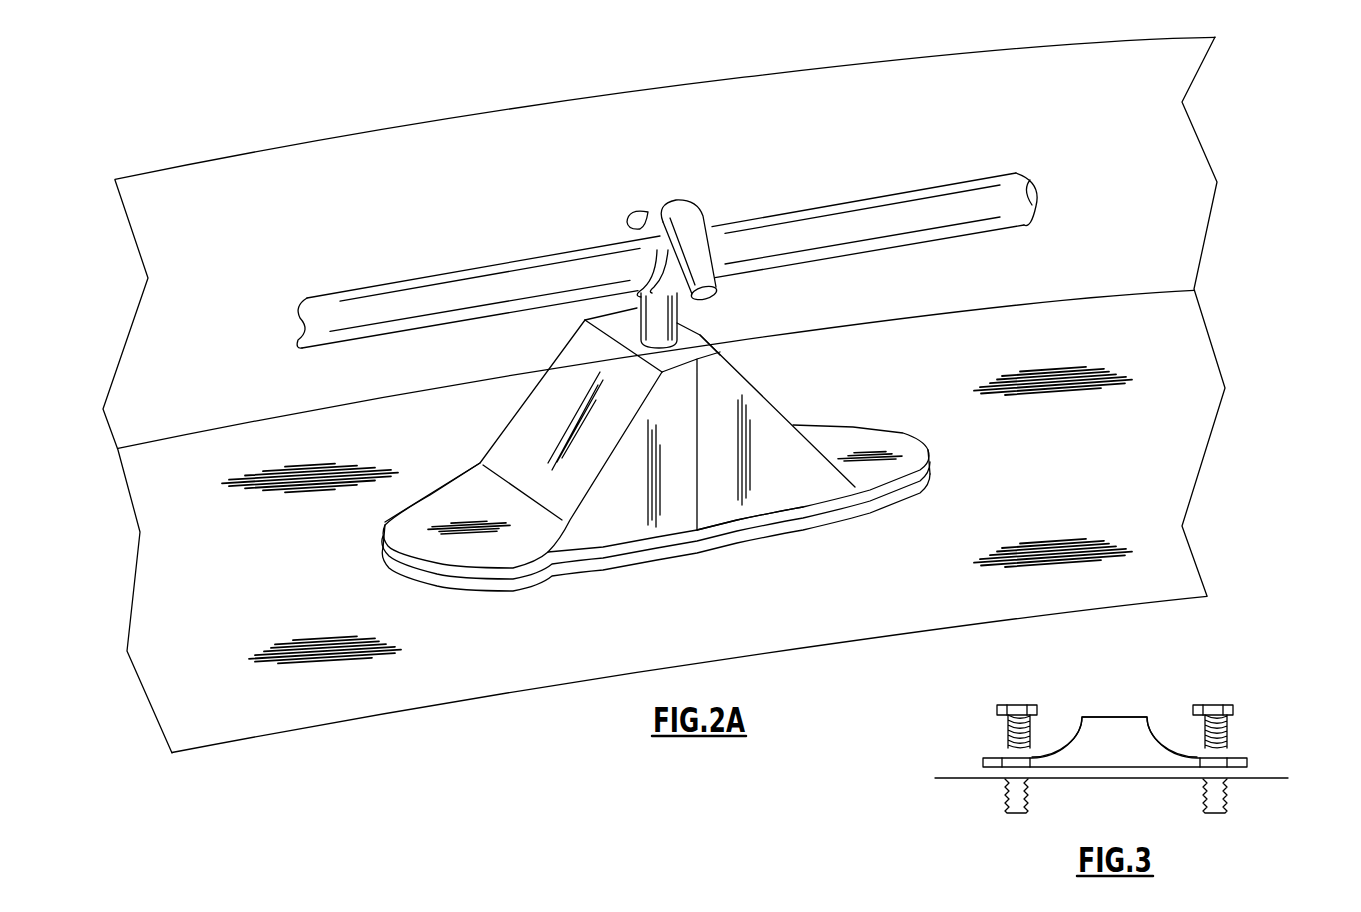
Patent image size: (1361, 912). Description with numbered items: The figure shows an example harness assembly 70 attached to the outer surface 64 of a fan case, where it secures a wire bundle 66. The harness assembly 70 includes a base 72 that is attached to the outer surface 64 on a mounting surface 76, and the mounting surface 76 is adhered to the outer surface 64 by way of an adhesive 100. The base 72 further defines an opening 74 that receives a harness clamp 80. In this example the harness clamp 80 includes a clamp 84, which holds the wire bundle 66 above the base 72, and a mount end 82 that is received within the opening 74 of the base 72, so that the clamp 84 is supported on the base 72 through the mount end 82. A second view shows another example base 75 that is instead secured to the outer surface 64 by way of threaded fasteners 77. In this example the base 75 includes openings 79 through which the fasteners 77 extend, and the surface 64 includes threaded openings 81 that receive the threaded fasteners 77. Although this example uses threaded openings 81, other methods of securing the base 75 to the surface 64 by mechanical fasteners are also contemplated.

In FIG. 2A, the outer surface 64 is at (1120, 469).
In FIG. 3, the outer surface 64 is at (1278, 773).
In FIG. 2A, the wire bundle 66 is at (496, 277).
In FIG. 2A, the harness assembly 70 is at (1008, 279).
In FIG. 2A, the base 72 is at (537, 428).
In FIG. 2A, the opening 74 is at (688, 334).
In FIG. 3, the base 75 is at (1135, 743).
In FIG. 2A, the mounting surface 76 is at (539, 590).
In FIG. 3, the mounting surface 76 is at (1101, 778).
In FIG. 3, the threaded fastener 77 is at (1010, 733).
In FIG. 3, the openings 79 is at (1017, 764).
In FIG. 2A, the harness clamp 80 is at (711, 197).
In FIG. 3, the threaded openings 81 is at (1024, 794).
In FIG. 2A, the mount end 82 is at (628, 330).
In FIG. 2A, the clamp 84 is at (638, 217).
In FIG. 2A, the adhesive 100 is at (737, 533).